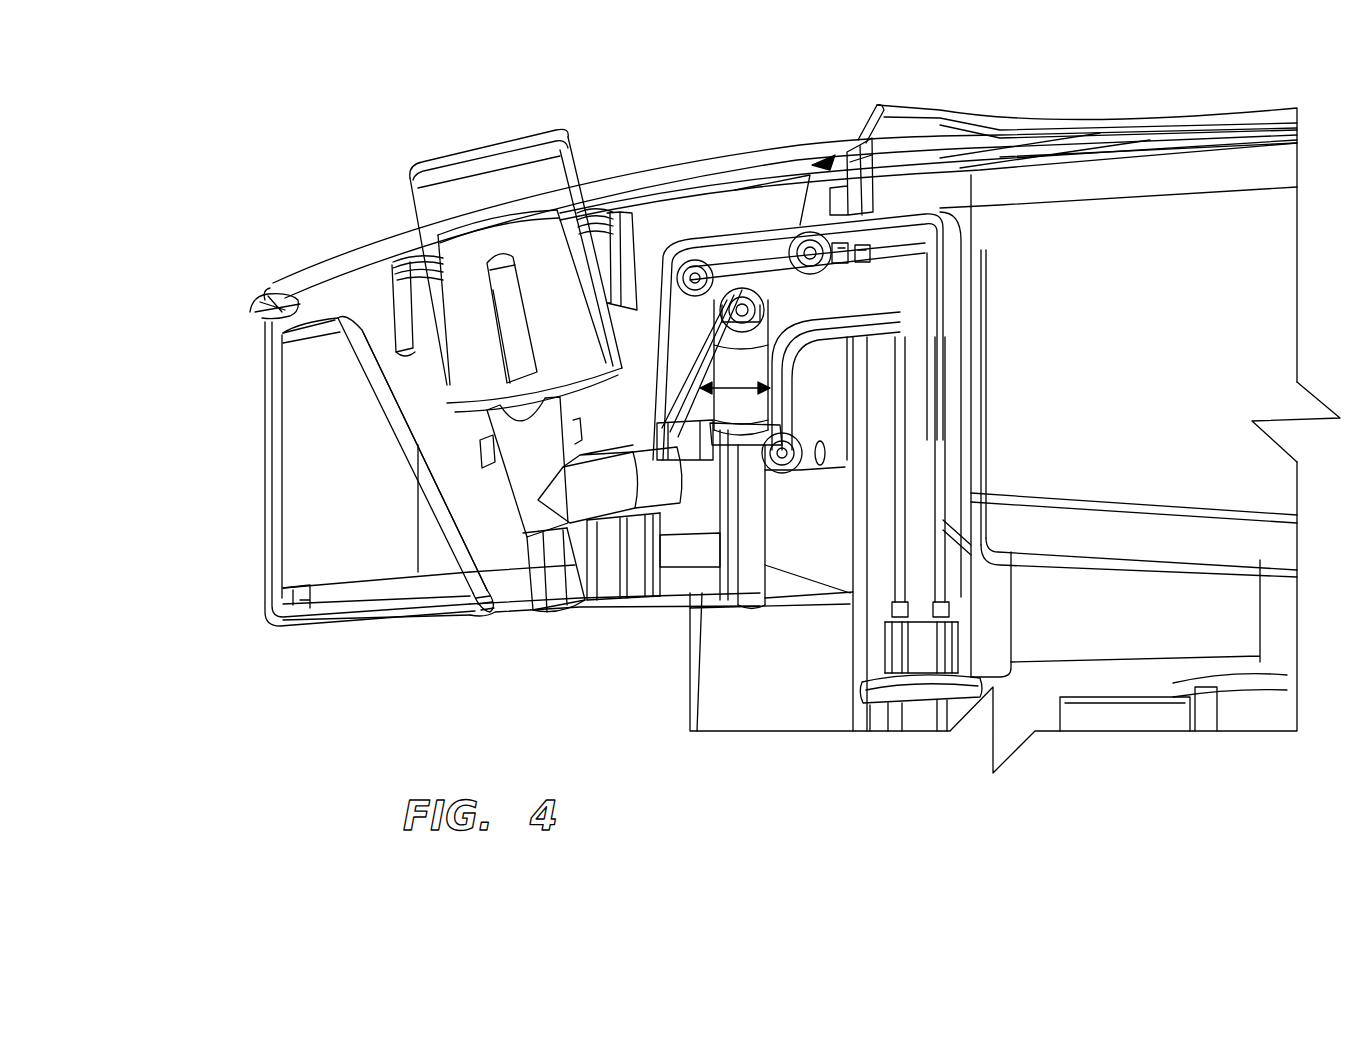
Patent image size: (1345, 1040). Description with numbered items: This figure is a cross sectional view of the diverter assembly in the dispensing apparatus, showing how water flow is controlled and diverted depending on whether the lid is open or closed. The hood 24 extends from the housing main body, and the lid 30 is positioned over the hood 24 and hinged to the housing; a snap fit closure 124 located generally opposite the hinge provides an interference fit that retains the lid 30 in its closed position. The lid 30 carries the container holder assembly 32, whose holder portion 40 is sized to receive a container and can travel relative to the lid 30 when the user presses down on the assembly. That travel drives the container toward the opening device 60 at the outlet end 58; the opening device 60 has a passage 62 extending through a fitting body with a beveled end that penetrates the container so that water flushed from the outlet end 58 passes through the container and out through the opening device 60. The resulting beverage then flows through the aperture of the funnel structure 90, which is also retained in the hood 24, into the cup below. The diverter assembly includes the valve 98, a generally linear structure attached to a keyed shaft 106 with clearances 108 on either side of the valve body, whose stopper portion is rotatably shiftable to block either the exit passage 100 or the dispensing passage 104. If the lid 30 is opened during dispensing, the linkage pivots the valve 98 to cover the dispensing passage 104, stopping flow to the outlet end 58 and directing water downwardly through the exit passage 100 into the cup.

The hood 24 is at (178, 372).
The lid 30 is at (340, 256).
The container holder assembly 32 is at (393, 164).
The holder portion 40 is at (490, 135).
The outlet end 58 is at (500, 495).
The opening device 60 is at (493, 418).
The passage 62 is at (523, 457).
The funnel structure 90 is at (427, 445).
The valve 98 is at (745, 362).
The exit passage 100 is at (752, 578).
The dispensing passage 104 is at (700, 457).
The keyed shaft 106 is at (737, 293).
The clearances 108 is at (710, 375).
The snap fit closure 124 is at (270, 298).